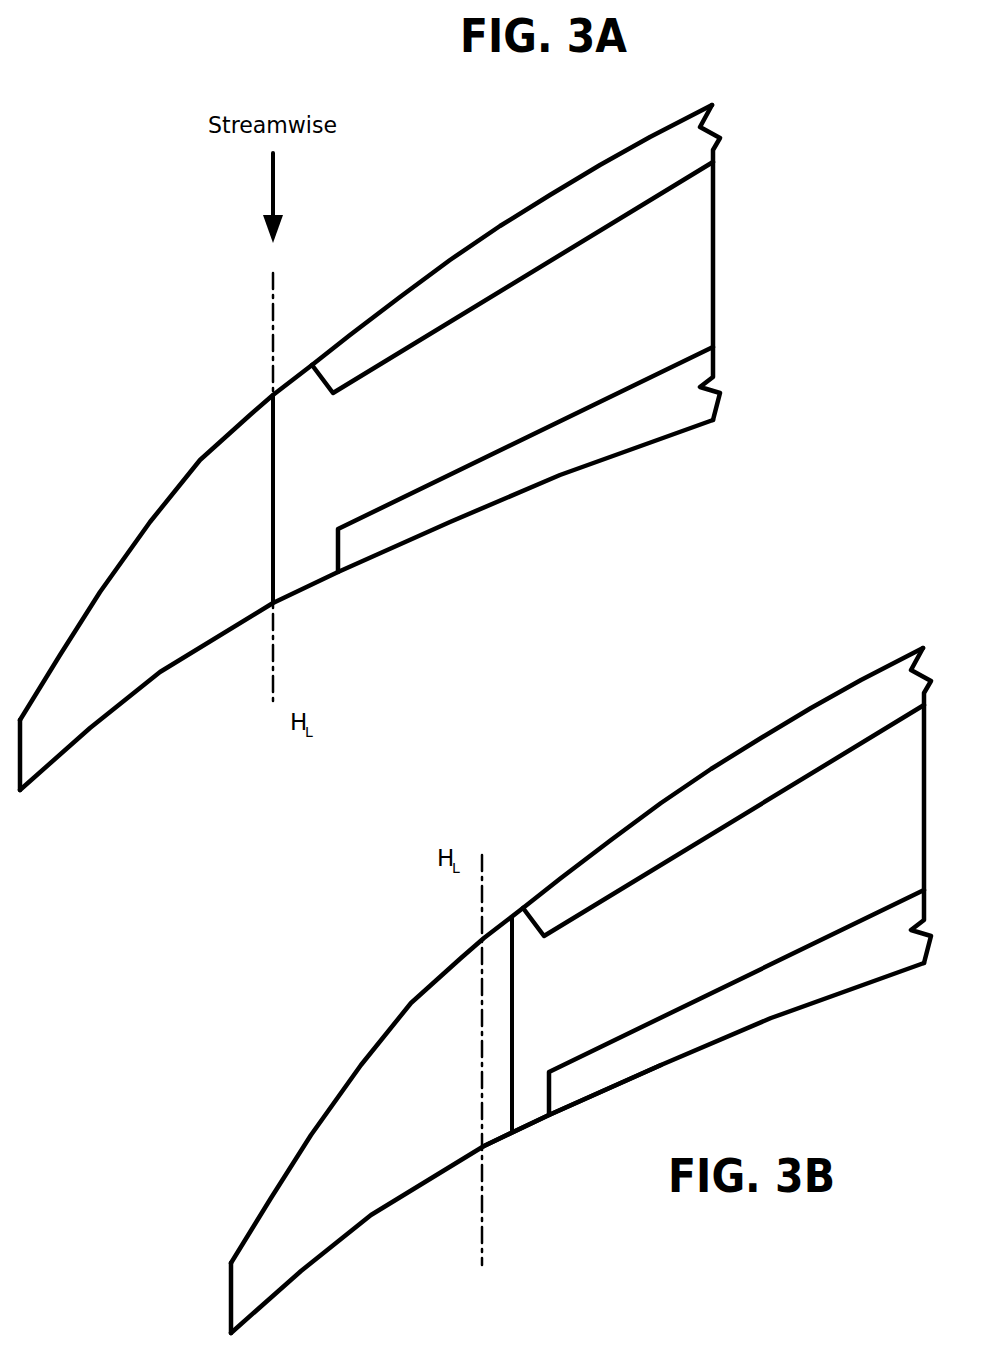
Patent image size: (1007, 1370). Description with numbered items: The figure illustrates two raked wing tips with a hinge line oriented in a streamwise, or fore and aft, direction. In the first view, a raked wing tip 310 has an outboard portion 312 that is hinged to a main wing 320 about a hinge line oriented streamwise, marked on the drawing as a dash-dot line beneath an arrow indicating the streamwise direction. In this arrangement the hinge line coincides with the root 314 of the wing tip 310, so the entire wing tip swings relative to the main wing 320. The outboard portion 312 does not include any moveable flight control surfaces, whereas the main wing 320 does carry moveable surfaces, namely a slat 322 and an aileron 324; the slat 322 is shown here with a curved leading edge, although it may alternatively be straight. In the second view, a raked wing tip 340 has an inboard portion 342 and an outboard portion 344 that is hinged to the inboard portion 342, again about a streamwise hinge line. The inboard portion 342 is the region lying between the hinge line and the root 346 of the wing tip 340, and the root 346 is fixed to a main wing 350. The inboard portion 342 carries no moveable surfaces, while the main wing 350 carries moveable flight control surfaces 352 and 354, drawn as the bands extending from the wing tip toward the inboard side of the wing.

In FIG. 3A, the raked wing tip 310 is at (366, 447).
In FIG. 3A, the outboard portion 312 is at (88, 728).
In FIG. 3A, the root 314 is at (277, 468).
In FIG. 3A, the main wing 320 is at (557, 338).
In FIG. 3A, the slat 322 is at (558, 190).
In FIG. 3A, the aileron 324 is at (653, 444).
In FIG. 3B, the raked wing tip 340 is at (571, 990).
In FIG. 3B, the inboard portion 342 is at (492, 1145).
In FIG. 3B, the outboard portion 344 is at (285, 1283).
In FIG. 3B, the root 346 is at (515, 1003).
In FIG. 3B, the main wing 350 is at (727, 868).
In FIG. 3B, the moveable flight control surface 352 is at (680, 796).
In FIG. 3B, the moveable flight control surface 354 is at (747, 1036).